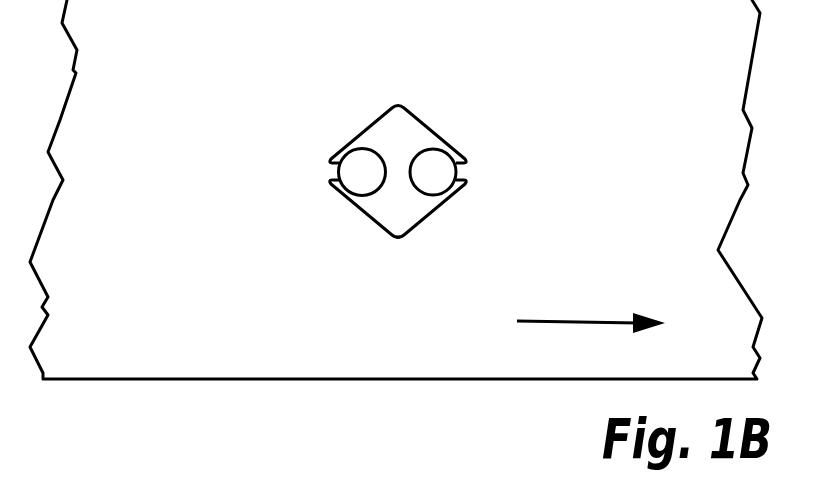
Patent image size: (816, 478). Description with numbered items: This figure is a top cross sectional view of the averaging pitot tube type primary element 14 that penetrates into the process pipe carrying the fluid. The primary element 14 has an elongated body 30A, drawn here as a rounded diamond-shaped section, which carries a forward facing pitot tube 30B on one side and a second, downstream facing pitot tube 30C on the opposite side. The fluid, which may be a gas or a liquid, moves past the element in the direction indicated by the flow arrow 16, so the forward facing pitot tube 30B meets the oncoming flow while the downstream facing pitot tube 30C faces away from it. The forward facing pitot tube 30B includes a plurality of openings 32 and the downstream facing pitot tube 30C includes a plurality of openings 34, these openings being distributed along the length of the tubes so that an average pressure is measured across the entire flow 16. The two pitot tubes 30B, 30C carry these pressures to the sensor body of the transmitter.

The averaging pitot tube type primary element 14 is at (447, 215).
The arrow indicating direction of flow 16 is at (543, 323).
The elongated body 30A is at (453, 147).
The forward facing pitot tube 30B is at (362, 148).
The downstream facing pitot tube 30C is at (426, 194).
The openings 32 is at (328, 171).
The openings 34 is at (455, 172).